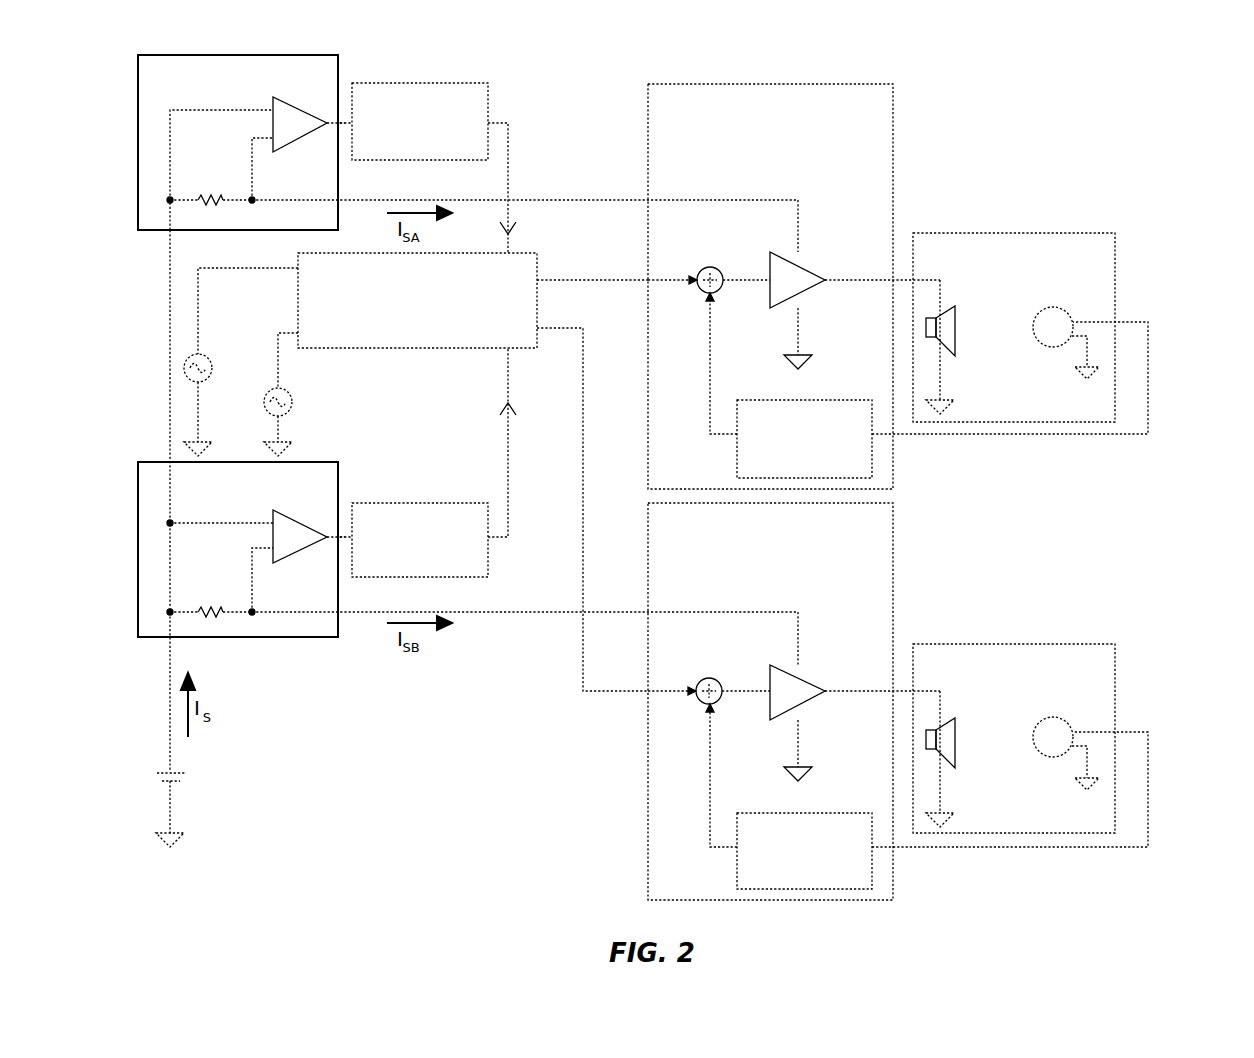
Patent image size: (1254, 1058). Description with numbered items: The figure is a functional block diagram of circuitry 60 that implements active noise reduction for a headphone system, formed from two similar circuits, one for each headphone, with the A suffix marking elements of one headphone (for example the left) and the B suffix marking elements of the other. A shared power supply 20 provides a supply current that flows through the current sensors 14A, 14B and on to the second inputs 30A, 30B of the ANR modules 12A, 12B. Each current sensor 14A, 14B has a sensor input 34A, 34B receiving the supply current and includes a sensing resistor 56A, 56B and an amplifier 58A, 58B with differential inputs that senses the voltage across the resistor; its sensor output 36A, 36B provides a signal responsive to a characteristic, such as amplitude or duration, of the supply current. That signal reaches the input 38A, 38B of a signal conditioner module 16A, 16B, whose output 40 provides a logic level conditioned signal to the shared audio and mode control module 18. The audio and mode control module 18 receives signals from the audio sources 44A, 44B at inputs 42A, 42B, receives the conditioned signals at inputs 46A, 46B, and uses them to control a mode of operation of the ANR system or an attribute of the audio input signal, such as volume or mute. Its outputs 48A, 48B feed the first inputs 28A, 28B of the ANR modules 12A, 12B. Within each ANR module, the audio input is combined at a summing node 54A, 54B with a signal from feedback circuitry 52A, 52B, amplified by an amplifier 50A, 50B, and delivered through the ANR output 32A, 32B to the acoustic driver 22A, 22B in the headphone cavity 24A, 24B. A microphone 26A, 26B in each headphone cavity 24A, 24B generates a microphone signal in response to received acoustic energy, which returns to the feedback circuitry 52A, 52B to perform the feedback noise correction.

The ANR module 12A is at (770, 286).
The ANR module 12B is at (770, 701).
The current sensor 14A is at (238, 142).
The current sensor 14B is at (238, 500).
The signal conditioner module 16A is at (420, 121).
The signal conditioner module 16B is at (420, 540).
The audio and mode control module 18 is at (417, 300).
The power supply 20 is at (157, 773).
The acoustic driver 22A is at (957, 338).
The acoustic driver 22B is at (957, 750).
The headphone cavity 24A is at (1014, 327).
The headphone cavity 24B is at (1014, 738).
The microphone 26A is at (1053, 347).
The microphone 26B is at (1053, 757).
The first input 28A is at (648, 283).
The first input 28B is at (648, 694).
The second input 30A is at (648, 200).
The second input 30B is at (648, 612).
The ANR output 32A is at (893, 280).
The ANR output 32B is at (893, 691).
The sensor input 34A is at (250, 198).
The sensor input 34B is at (250, 610).
The sensor output 36A is at (327, 130).
The sensor output 36B is at (327, 544).
The input 38A is at (352, 122).
The input 38B is at (352, 536).
The output 40 is at (490, 123).
The input 42A is at (298, 268).
The input 42B is at (298, 333).
The audio source 44A is at (213, 368).
The audio source 44B is at (292, 402).
The input 46A is at (512, 254).
The input 46B is at (510, 352).
The output 48A is at (540, 280).
The output 48B is at (540, 328).
The amplifier 50A is at (797, 310).
The amplifier 50B is at (797, 723).
The feedback circuitry 52A is at (927, 385).
The feedback circuitry 52B is at (927, 796).
The summing node 54A is at (710, 267).
The summing node 54B is at (709, 678).
The sensing resistor 56A is at (217, 196).
The sensing resistor 56B is at (217, 608).
The amplifier 58A is at (300, 124).
The amplifier 58B is at (300, 536).
The circuitry 60 is at (1200, 205).